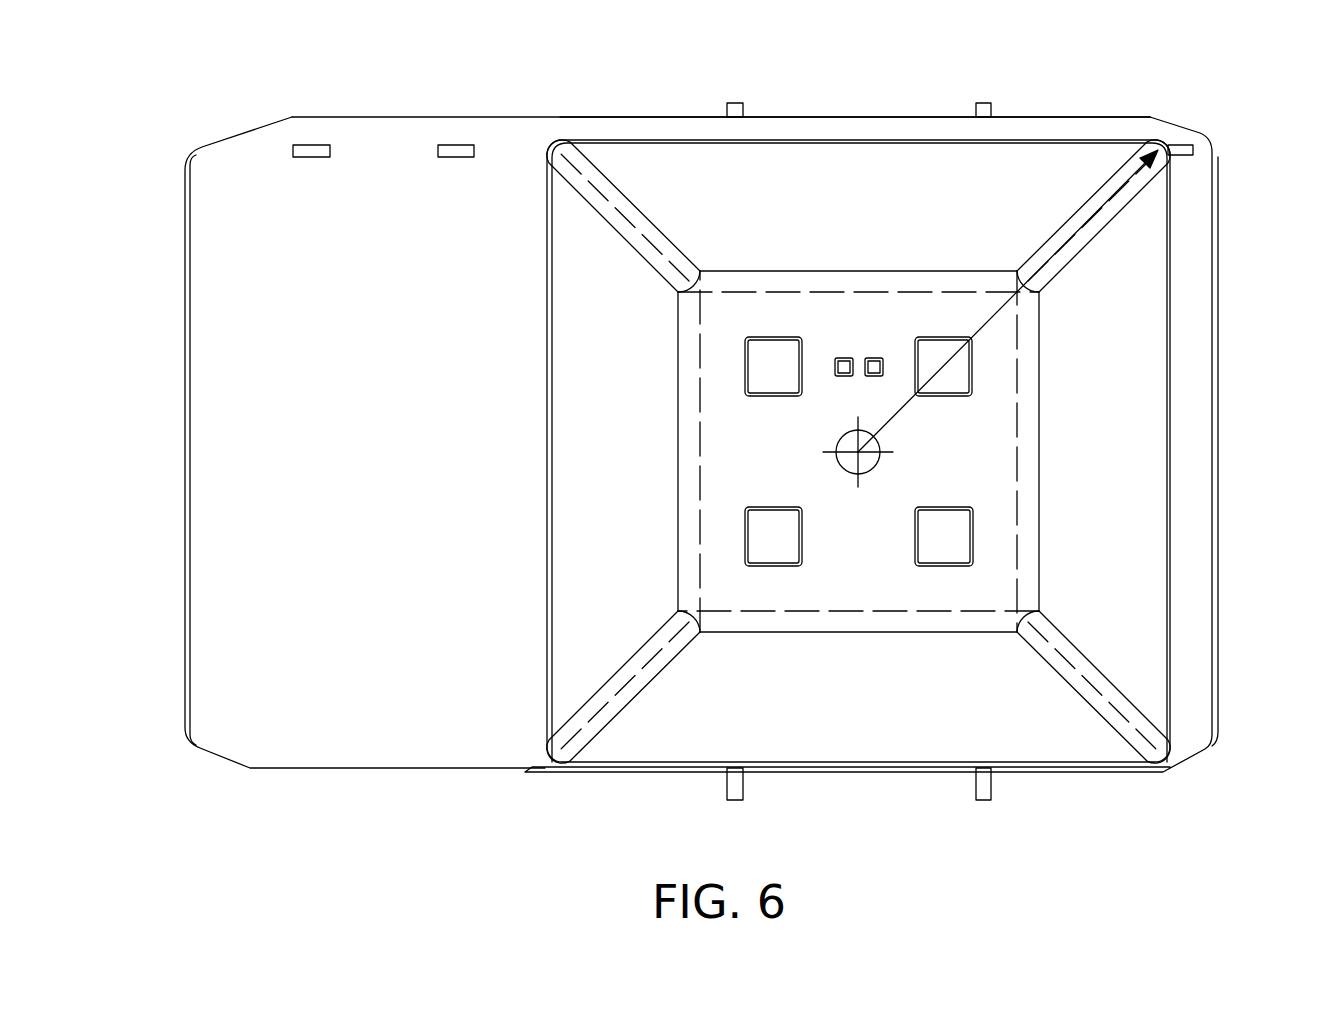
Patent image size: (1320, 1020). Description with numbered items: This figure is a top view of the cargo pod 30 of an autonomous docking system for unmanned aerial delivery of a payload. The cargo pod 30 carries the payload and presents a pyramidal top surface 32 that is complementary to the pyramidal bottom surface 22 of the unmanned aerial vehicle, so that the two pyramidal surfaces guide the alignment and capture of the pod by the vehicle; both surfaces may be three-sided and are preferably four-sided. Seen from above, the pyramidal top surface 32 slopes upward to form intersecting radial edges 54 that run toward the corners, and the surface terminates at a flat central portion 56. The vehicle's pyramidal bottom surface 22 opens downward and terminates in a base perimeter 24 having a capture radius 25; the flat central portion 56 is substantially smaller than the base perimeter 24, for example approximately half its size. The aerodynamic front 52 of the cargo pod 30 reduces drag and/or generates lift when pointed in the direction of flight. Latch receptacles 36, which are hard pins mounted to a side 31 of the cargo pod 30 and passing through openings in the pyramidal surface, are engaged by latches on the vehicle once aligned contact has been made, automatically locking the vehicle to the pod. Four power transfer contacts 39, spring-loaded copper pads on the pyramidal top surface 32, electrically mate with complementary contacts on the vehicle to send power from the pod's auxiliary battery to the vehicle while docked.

The pyramidal bottom surface 22 is at (842, 150).
The base perimeter 24 is at (916, 140).
The capture radius 25 is at (1068, 245).
The cargo pod 30 is at (194, 99).
The side 31 is at (403, 115).
The pyramidal top surface 32 is at (709, 205).
The latch receptacle 36 is at (735, 103).
The power transfer contact 39 is at (780, 380).
The aerodynamic front 52 is at (205, 470).
The radial edges 54 is at (570, 160).
The flat central portion 56 is at (960, 458).